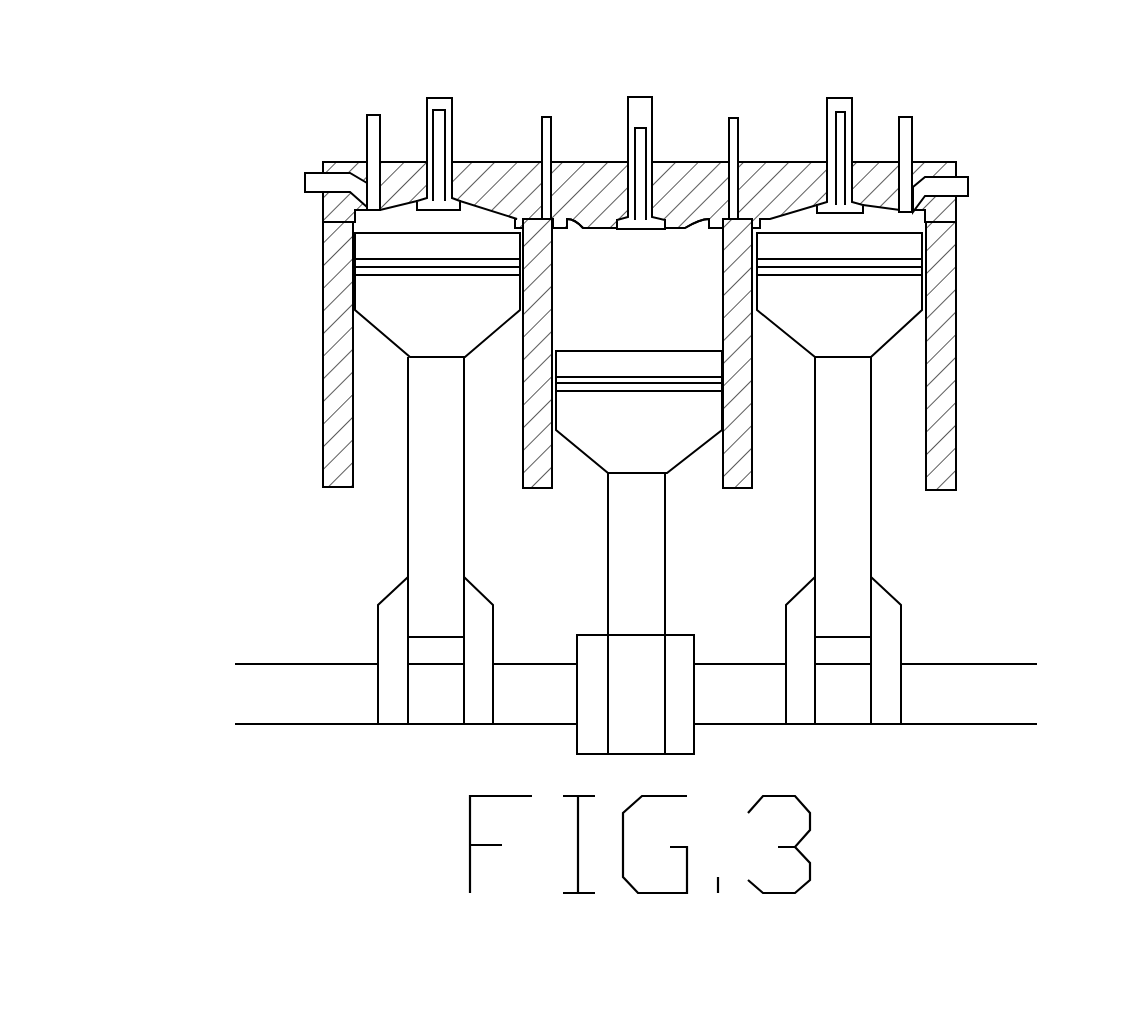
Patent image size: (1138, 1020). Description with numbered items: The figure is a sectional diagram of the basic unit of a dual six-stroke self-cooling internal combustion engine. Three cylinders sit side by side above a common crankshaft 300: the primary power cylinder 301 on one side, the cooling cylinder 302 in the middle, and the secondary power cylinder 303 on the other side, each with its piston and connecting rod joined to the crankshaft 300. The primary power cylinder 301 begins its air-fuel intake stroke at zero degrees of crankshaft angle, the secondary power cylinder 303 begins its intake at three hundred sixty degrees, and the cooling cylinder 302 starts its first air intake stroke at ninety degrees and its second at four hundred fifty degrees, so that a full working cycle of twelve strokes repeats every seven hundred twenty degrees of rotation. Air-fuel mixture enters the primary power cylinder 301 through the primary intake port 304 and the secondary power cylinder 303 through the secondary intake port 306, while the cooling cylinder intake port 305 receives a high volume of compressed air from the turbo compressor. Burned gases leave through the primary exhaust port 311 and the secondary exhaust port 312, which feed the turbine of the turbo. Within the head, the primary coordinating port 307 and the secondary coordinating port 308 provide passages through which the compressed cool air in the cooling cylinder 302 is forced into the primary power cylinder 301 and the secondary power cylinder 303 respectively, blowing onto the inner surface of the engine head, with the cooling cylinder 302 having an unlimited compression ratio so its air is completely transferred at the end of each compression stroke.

The crankshaft 300 is at (1020, 654).
The primary power cylinder 301 is at (363, 495).
The cooling cylinder 302 is at (578, 495).
The secondary power cylinder 303 is at (920, 503).
The primary intake port 304 is at (439, 83).
The cooling cylinder intake port 305 is at (642, 83).
The secondary intake port 306 is at (842, 84).
The primary coordinating port 307 is at (586, 241).
The secondary coordinating port 308 is at (694, 243).
The primary exhaust port 311 is at (290, 183).
The secondary exhaust port 312 is at (989, 184).